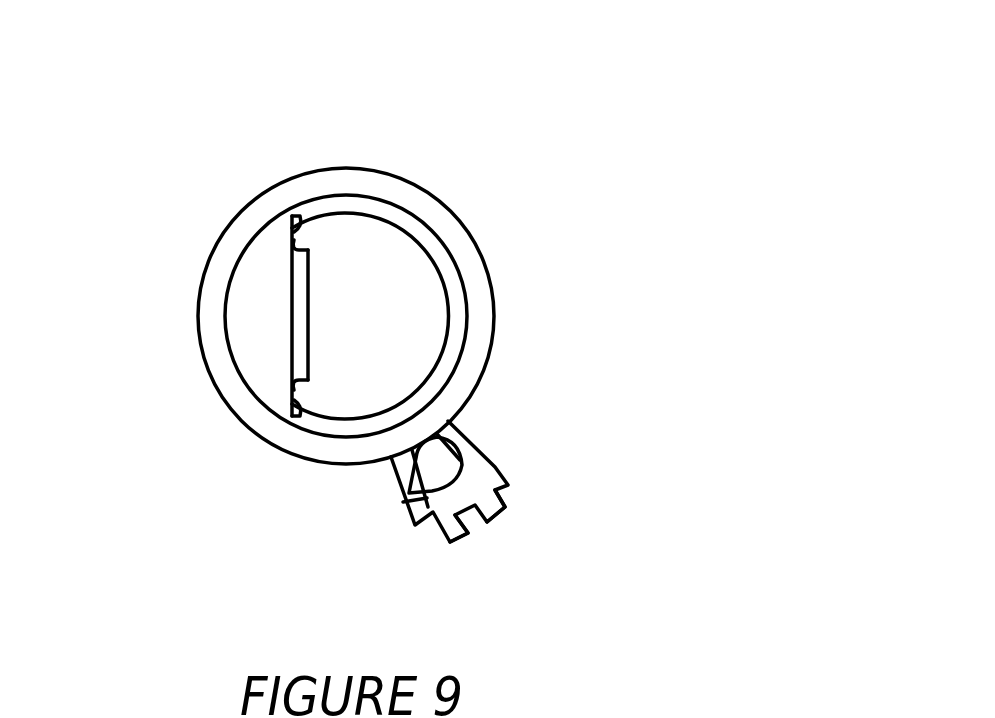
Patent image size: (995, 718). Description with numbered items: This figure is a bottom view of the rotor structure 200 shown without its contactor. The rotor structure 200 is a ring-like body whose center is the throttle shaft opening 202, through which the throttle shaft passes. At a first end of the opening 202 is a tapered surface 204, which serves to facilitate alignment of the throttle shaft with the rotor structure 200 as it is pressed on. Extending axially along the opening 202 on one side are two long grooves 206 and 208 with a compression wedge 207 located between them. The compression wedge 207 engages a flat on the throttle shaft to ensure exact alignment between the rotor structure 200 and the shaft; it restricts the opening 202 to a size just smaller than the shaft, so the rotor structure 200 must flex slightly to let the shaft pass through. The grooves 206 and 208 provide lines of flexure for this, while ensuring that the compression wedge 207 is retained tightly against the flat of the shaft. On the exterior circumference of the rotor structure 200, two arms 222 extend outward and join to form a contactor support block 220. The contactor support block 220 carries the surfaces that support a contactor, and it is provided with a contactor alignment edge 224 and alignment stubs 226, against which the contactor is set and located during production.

The rotor structure 200 is at (488, 87).
The throttle shaft opening 202 is at (452, 315).
The tapered surface 204 is at (265, 323).
The long groove 206 is at (293, 212).
The compression wedge 207 is at (305, 282).
The long groove 208 is at (303, 397).
The contactor support block 220 is at (490, 473).
The arms 222 is at (458, 443).
The contactor alignment edge 224 is at (465, 543).
The alignment stubs 226 is at (492, 508).